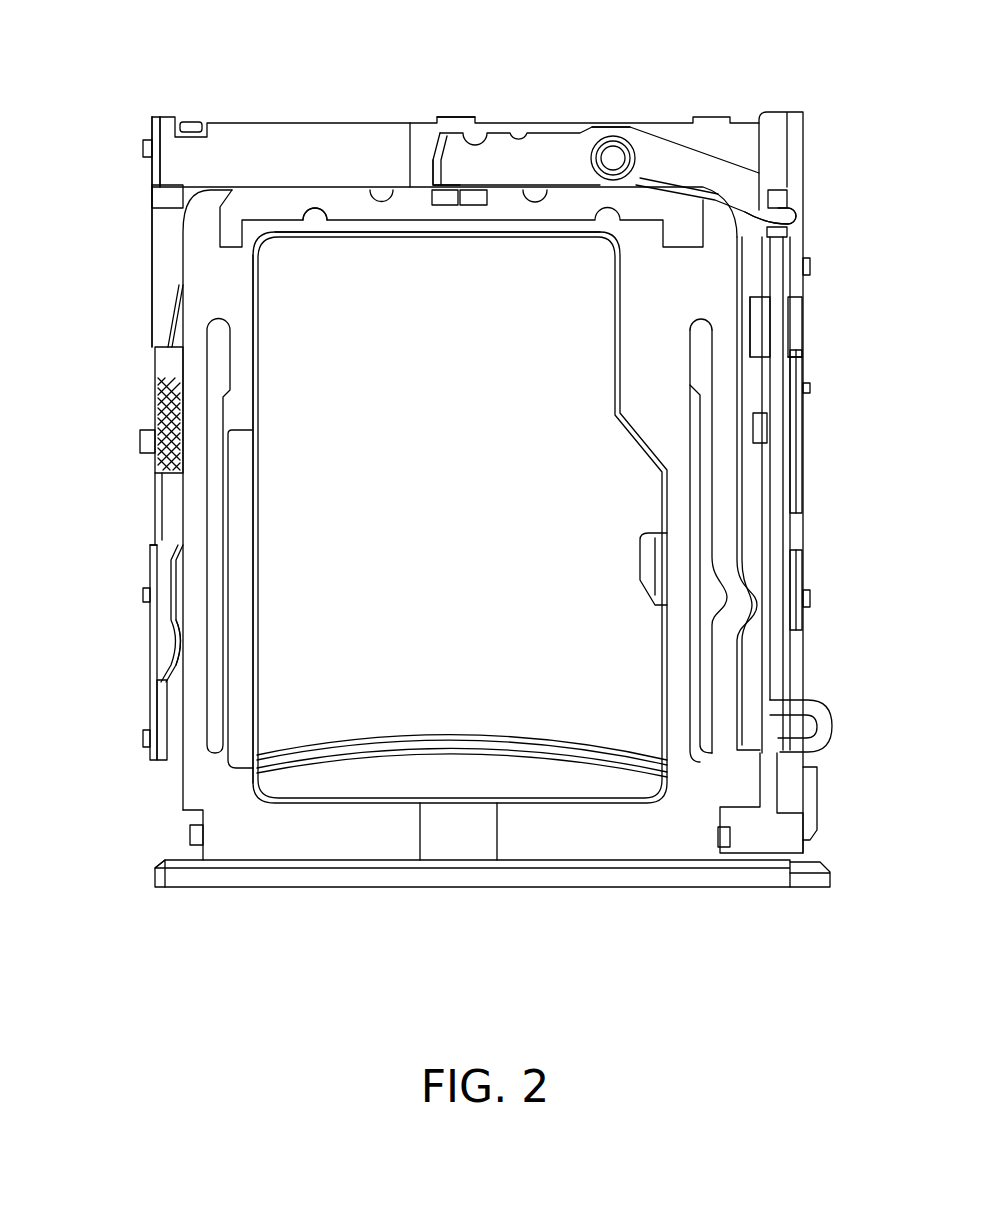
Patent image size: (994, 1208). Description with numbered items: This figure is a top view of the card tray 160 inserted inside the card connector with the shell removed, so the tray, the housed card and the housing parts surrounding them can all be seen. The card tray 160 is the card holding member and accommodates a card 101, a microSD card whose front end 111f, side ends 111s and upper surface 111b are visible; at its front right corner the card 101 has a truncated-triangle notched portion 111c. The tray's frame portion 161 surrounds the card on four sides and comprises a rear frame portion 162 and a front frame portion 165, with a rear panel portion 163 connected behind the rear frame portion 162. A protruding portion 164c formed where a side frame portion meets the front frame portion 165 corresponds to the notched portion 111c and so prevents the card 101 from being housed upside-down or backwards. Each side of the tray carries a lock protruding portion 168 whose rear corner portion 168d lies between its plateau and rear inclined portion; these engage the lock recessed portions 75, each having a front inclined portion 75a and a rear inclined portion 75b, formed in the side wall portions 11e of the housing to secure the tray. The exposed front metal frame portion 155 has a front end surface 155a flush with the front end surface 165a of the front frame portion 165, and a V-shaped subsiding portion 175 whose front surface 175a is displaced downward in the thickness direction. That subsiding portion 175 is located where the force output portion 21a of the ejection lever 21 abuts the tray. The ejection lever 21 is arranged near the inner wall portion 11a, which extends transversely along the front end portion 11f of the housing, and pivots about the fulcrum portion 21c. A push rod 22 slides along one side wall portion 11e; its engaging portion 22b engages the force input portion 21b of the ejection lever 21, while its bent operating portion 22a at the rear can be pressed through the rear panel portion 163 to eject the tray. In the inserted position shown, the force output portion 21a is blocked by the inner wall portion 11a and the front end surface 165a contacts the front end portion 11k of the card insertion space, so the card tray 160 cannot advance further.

The inner wall portion 11a is at (315, 150).
The front end portion of the card insertion space 11k is at (252, 185).
The front end portion 11f is at (420, 123).
The front end surface of the front metal frame portion 155a is at (348, 187).
The ejection lever 21 is at (546, 152).
The force output portion 21a is at (486, 140).
The fulcrum portion 21c is at (624, 125).
The front metal frame portion 155 is at (587, 203).
The force input portion 21b is at (800, 222).
The push rod 22 is at (780, 477).
The engaging portion 22b is at (790, 198).
The operating portion 22a is at (817, 756).
The protruding portion 164c is at (628, 412).
The upper surface 111b is at (633, 677).
The notched portion 111c is at (617, 417).
The front end 111f is at (510, 237).
The side end 111s is at (250, 700).
The front frame portion 165 is at (560, 236).
The front end surface of the front frame portion 165a is at (287, 200).
The subsiding portion 175 is at (473, 205).
The front surface of the subsiding portion 175a is at (443, 205).
The lock protruding portion 168 is at (177, 567).
The rear corner portion 168d is at (173, 630).
The lock recessed portion 75 is at (153, 580).
The front inclined portion 75a is at (177, 567).
The rear inclined portion 75b is at (173, 630).
The side wall portion 11e is at (150, 673).
The frame portion 161 is at (180, 813).
The card 101 is at (400, 775).
The rear panel portion 163 is at (285, 872).
The rear frame portion 162 is at (600, 847).
The card tray 160 is at (178, 903).